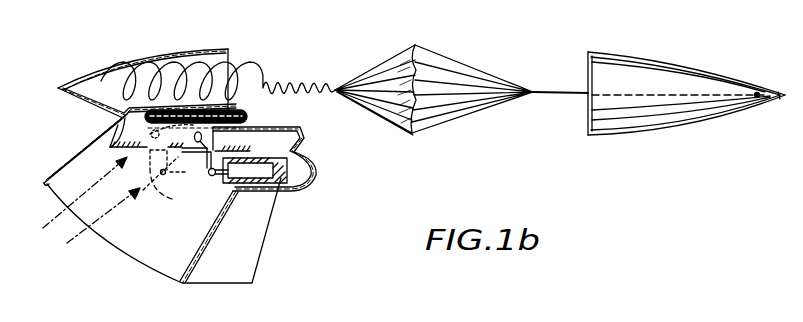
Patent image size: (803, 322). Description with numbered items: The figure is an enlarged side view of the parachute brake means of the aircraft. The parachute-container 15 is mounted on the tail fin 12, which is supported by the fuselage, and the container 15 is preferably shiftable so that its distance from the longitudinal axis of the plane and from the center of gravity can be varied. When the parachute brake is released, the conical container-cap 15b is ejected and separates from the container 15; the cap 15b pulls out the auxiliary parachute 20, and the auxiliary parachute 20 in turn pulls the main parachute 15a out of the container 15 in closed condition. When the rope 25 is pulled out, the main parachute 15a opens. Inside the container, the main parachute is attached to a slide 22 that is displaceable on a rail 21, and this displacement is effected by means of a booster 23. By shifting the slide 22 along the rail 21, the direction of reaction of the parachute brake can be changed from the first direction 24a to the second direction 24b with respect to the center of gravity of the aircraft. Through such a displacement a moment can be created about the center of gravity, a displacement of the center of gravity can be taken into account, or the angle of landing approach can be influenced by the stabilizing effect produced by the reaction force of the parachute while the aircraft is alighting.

The tail fin 12 is at (64, 162).
The parachute-container 15 is at (172, 57).
The main parachute 15a is at (228, 49).
The conical container-cap 15b is at (685, 46).
The auxiliary parachute 20 is at (467, 70).
The rail 21 is at (113, 121).
The slide 22 is at (205, 156).
The booster 23 is at (268, 185).
The direction of reaction 24a is at (78, 238).
The direction of reaction 24b is at (62, 217).
The rope 25 is at (248, 114).